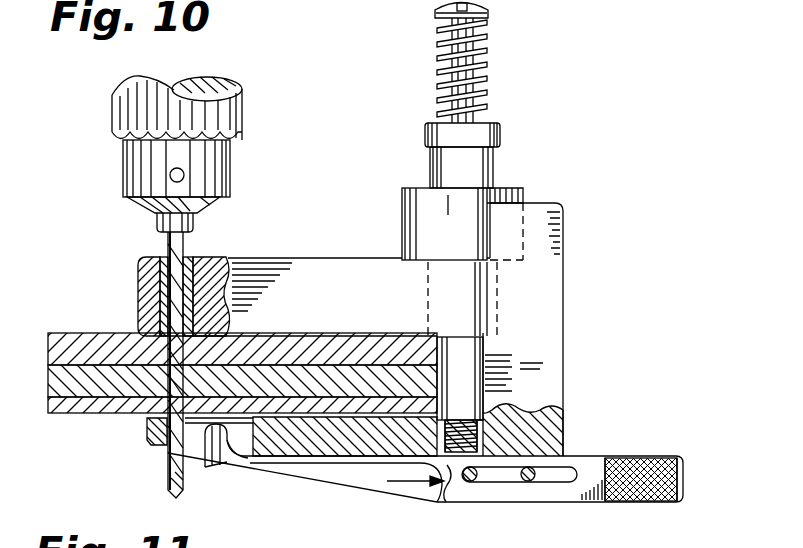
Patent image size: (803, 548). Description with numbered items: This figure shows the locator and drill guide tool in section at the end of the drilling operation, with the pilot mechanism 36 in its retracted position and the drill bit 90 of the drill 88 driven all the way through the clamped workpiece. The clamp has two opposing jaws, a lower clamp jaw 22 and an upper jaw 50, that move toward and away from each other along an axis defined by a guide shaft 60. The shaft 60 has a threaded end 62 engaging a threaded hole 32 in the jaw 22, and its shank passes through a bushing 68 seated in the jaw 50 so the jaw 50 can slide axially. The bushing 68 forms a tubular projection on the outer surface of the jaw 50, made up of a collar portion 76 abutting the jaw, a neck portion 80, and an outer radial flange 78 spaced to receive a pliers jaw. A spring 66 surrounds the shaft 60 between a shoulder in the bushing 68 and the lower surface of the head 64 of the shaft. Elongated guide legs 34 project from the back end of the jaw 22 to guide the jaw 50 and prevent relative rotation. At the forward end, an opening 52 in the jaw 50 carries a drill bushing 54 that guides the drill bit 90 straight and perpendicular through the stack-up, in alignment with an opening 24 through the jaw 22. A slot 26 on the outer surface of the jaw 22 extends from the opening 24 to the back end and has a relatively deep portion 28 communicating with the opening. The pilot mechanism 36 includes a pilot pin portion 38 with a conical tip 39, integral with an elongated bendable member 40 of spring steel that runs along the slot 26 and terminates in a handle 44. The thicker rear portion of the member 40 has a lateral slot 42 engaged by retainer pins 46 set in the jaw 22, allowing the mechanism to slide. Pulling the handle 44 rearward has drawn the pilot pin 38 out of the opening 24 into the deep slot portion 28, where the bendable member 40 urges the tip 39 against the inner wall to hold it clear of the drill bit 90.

The clamp jaw 22 is at (461, 413).
The opening 24 is at (165, 455).
The slot 26 is at (431, 500).
The relatively deep portion of slot 28 is at (247, 440).
The threaded hole 32 is at (477, 437).
The guide legs 34 is at (566, 273).
The pilot mechanism 36 is at (328, 470).
The pilot pin portion 38 is at (225, 468).
The conical tip 39 is at (197, 437).
The elongated bendable member 40 is at (450, 467).
The slot 42 is at (507, 483).
The handle 44 is at (677, 503).
The retainer pins 46 is at (473, 482).
The jaw 50 is at (307, 268).
The opening 52 is at (188, 282).
The drill bushing 54 is at (165, 257).
The guide shaft 60 is at (487, 68).
The threaded end 62 is at (467, 413).
The head 64 is at (490, 10).
The spring 66 is at (487, 90).
The bushing 68 is at (520, 177).
The collar portion 76 is at (478, 224).
The outer radial flange 78 is at (424, 137).
The neck portion 80 is at (473, 174).
The drill 88 is at (246, 116).
The drill bit 90 is at (167, 478).